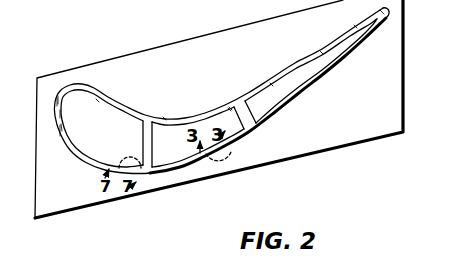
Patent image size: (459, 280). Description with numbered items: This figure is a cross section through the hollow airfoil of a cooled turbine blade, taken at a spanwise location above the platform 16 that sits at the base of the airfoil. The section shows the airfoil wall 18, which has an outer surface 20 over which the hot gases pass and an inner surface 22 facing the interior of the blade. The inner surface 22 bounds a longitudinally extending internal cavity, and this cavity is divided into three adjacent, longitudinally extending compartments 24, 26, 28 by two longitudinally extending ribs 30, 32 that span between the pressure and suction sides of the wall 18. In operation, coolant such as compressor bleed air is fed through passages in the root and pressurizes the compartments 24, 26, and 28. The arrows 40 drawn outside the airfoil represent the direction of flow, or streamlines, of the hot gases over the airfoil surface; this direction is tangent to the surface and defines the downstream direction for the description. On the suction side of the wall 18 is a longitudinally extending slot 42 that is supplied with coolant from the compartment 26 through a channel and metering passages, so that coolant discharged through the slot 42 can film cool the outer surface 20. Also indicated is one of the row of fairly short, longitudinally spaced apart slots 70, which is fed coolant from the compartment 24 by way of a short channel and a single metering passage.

The platform 16 is at (379, 103).
The wall 18 is at (94, 164).
The outer surface 20 is at (73, 148).
The inner surface 22 is at (226, 110).
The compartment 24 is at (101, 133).
The compartment 26 is at (181, 154).
The compartment 28 is at (279, 91).
The rib 30 is at (143, 136).
The rib 32 is at (251, 122).
The arrows 40 is at (308, 114).
The slot 42 is at (229, 150).
The slot 70 is at (141, 171).